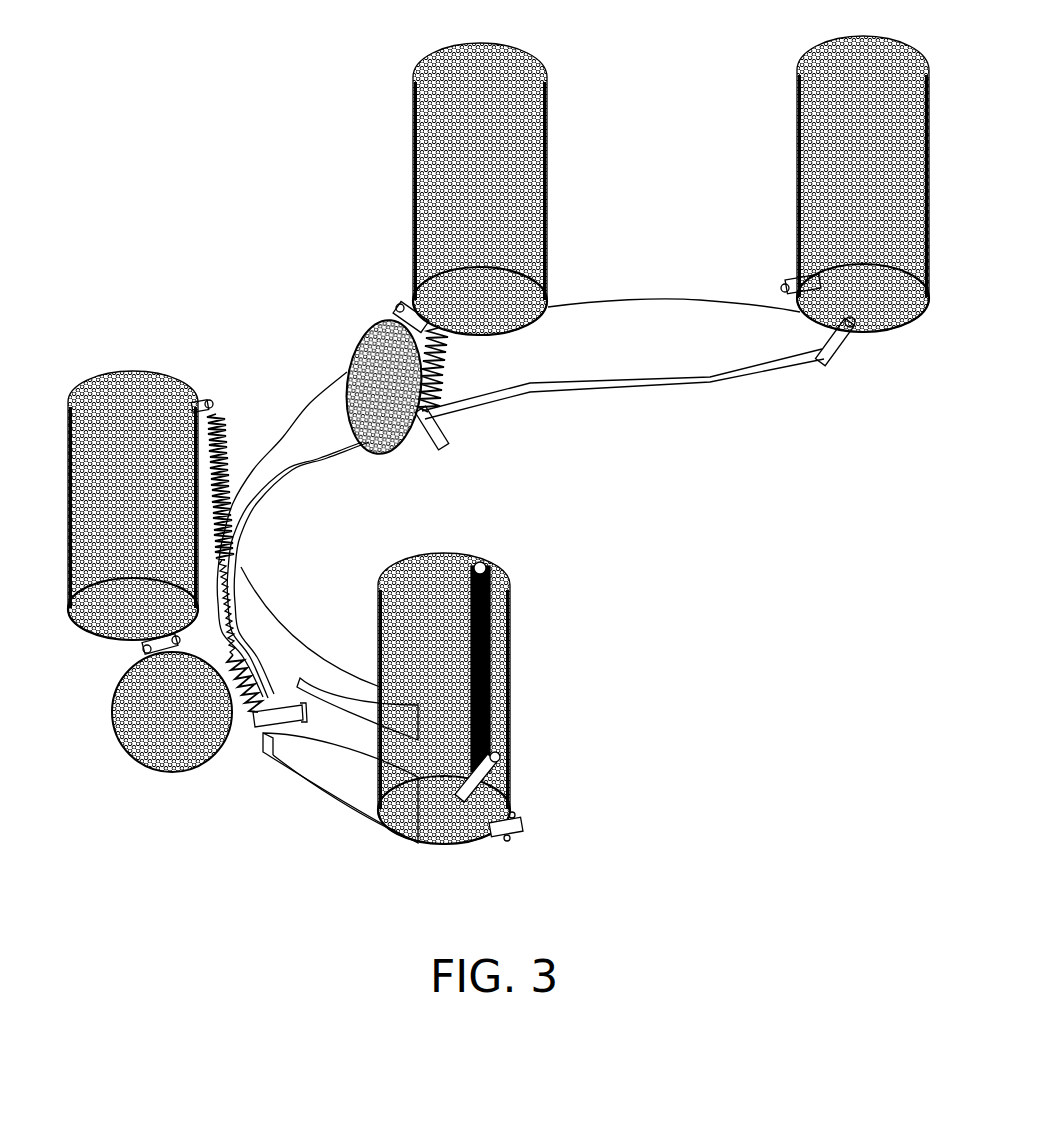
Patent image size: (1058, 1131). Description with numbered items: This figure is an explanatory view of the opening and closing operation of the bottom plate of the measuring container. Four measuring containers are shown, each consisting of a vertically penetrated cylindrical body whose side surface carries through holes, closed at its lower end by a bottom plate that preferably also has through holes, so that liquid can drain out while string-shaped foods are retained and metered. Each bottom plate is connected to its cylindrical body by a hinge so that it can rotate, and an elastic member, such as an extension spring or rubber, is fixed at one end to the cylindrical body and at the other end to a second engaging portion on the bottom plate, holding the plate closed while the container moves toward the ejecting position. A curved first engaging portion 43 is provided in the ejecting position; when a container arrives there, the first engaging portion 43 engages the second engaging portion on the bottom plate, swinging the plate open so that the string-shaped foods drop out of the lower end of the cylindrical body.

The first engaging portion 43 is at (707, 372).